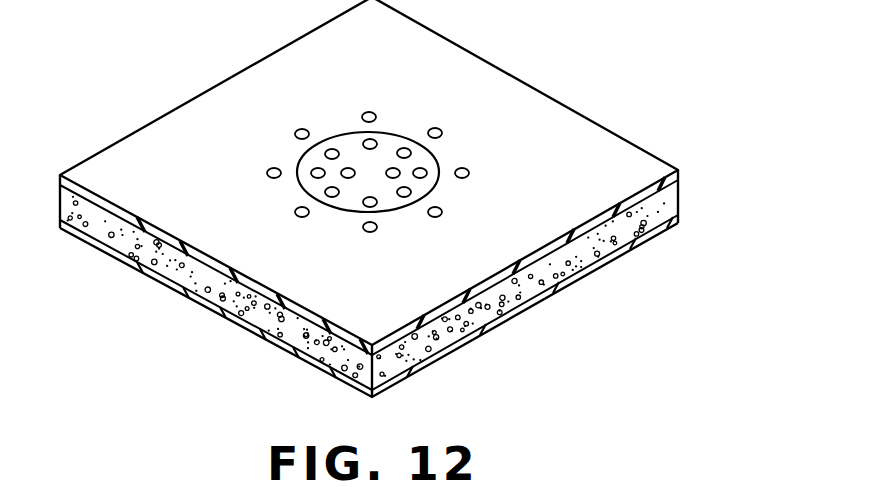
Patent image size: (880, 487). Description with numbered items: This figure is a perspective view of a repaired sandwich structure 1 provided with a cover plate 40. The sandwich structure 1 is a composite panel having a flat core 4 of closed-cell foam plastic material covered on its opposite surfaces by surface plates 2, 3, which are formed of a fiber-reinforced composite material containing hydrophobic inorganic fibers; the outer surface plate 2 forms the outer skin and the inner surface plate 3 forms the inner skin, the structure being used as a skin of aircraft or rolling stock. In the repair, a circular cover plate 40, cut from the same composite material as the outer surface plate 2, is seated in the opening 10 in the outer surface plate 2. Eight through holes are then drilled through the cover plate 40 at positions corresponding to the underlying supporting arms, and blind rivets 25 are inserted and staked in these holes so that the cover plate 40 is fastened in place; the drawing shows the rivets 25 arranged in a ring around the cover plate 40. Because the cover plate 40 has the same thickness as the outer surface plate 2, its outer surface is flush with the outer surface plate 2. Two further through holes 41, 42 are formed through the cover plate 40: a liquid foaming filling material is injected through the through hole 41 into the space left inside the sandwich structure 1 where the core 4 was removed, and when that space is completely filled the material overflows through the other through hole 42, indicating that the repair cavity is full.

The sandwich structure 1 is at (149, 92).
The outer surface plate 2 is at (652, 171).
The inner surface plate 3 is at (660, 234).
The core 4 is at (667, 207).
The opening 10 is at (440, 157).
The blind rivets 25 is at (365, 115).
The cover plate 40 is at (384, 147).
The through hole 41 is at (348, 178).
The through hole 42 is at (393, 178).